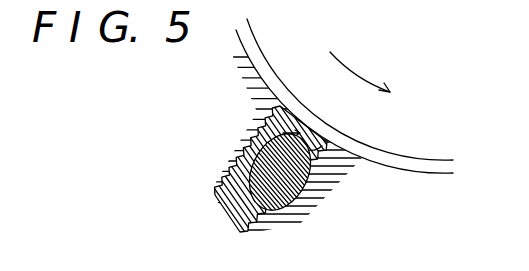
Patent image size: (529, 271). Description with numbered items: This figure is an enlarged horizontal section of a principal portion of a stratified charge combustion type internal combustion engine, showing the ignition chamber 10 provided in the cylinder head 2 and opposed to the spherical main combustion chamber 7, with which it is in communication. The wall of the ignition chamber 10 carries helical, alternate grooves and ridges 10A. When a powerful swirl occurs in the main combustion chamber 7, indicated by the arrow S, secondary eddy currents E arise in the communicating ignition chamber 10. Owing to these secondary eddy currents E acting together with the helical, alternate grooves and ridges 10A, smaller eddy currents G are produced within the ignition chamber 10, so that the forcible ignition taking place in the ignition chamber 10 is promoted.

The cylinder head 2 is at (253, 78).
The main combustion chamber 7 is at (408, 137).
The ignition chamber 10 is at (242, 222).
The helical, alternate grooves and ridges 10A is at (322, 204).
The rotation direction S is at (365, 92).
The secondary eddy currents E is at (318, 198).
The smaller eddy currents G is at (306, 218).